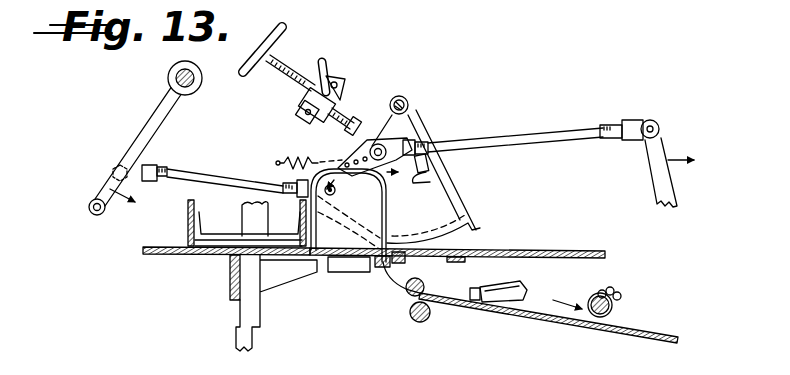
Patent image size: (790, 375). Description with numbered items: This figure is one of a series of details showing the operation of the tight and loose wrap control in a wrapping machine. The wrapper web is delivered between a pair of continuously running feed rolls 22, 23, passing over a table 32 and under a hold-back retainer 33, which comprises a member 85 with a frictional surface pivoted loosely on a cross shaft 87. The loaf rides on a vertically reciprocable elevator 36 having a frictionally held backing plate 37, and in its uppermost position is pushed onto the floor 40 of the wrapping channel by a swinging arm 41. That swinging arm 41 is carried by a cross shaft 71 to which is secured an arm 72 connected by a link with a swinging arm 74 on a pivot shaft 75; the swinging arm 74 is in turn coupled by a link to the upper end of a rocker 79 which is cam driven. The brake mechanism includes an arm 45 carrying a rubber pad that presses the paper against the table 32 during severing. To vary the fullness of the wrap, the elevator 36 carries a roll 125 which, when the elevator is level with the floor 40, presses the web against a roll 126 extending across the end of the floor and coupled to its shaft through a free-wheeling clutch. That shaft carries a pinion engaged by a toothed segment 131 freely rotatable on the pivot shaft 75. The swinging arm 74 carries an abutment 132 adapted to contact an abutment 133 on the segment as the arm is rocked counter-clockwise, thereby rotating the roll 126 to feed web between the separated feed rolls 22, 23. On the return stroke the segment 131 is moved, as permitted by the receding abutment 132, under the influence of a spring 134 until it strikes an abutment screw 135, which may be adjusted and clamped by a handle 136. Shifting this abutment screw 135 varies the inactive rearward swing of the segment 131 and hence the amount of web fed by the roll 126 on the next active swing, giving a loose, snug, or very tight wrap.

The cross shaft 71 is at (196, 86).
The arm 72 is at (128, 134).
The swinging arm 41 is at (135, 152).
The backing plate 37 is at (213, 229).
The elevator 36 is at (202, 249).
The handle 136 is at (326, 66).
The abutment screw 135 is at (362, 143).
The spring 134 is at (305, 154).
The pivot shaft 75 is at (411, 99).
The swinging arm 74 is at (410, 125).
The rocker 79 is at (662, 185).
The abutment 133 is at (438, 174).
The abutment 132 is at (388, 176).
The toothed segment 131 is at (472, 232).
The floor 40 is at (576, 252).
The roll 126 is at (402, 260).
The roll 125 is at (388, 268).
The arm 45 is at (503, 283).
The retainer 33 is at (566, 297).
The cross shaft 87 is at (610, 291).
The member 85 is at (612, 306).
The table 32 is at (572, 327).
The upper feed roll 22 is at (410, 297).
The lower feed roll 23 is at (421, 323).